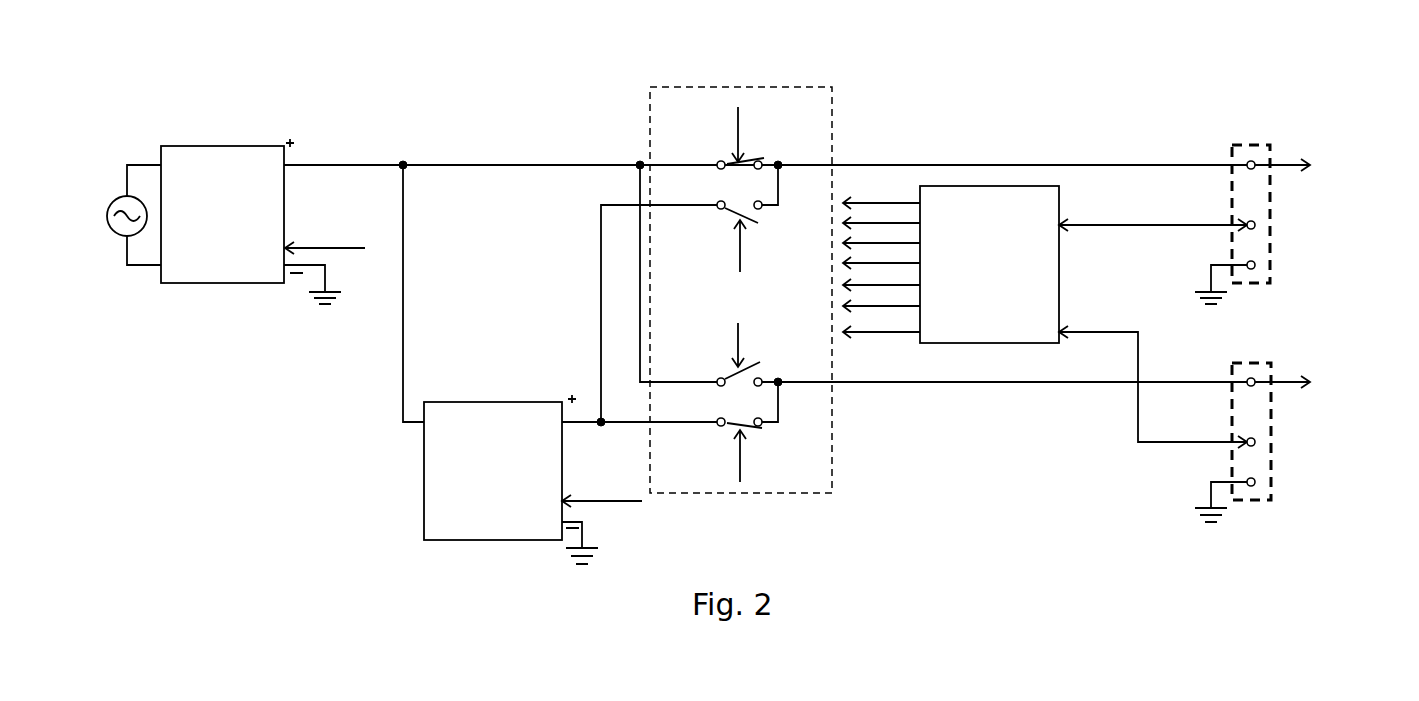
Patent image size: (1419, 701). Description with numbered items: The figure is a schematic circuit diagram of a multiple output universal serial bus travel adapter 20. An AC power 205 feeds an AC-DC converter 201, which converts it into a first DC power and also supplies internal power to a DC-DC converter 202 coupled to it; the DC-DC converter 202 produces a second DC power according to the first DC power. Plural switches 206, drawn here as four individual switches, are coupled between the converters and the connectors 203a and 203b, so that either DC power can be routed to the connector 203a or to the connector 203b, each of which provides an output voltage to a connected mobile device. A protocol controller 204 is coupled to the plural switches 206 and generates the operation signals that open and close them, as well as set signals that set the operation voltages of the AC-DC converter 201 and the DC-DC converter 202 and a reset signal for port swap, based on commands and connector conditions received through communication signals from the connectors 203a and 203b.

The multiple output universal serial bus travel adapter 20 is at (553, 48).
The AC power 205 is at (115, 198).
The AC-DC converter 201 is at (263, 210).
The DC-DC converter 202 is at (533, 471).
The plural switches 206 is at (725, 86).
The protocol controller 204 is at (1045, 316).
The connector 203a is at (1242, 143).
The connector 203b is at (1242, 362).